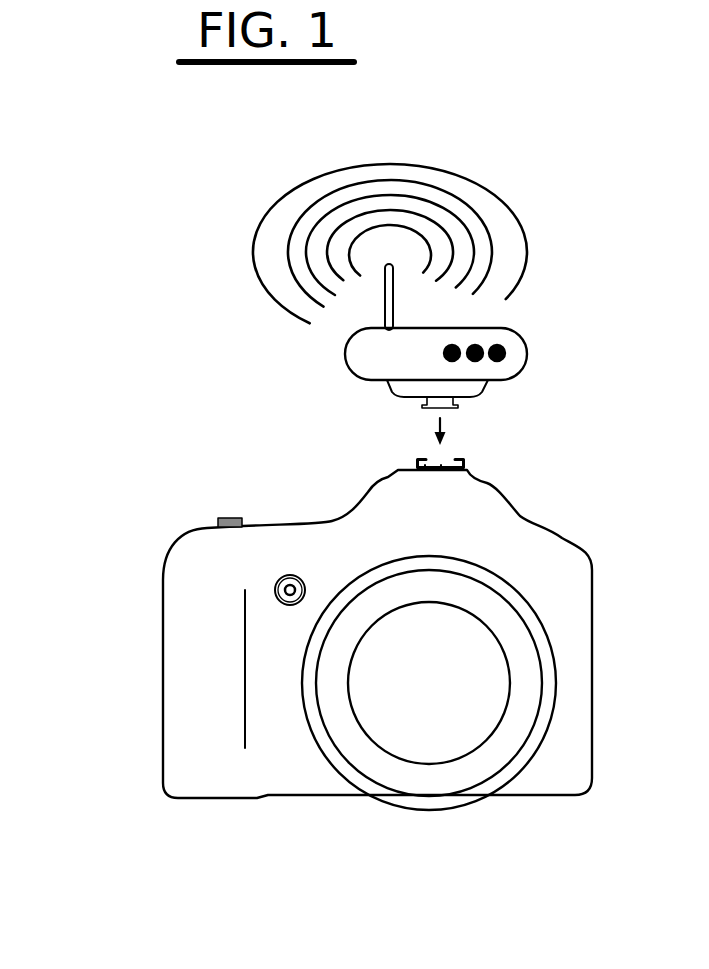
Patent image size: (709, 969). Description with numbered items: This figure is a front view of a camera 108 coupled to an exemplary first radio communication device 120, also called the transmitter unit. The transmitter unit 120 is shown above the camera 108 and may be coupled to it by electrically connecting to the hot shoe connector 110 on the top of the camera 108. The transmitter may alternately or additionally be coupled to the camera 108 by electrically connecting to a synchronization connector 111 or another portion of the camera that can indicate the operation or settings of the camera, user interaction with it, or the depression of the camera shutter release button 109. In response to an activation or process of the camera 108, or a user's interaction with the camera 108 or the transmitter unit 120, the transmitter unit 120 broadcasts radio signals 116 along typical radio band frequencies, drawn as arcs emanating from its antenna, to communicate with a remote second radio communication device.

The camera 108 is at (178, 530).
The camera shutter release button 109 is at (222, 508).
The hot shoe connector 110 is at (473, 463).
The synchronization connector 111 is at (287, 565).
The radio signals 116 is at (528, 213).
The first radio communication device 120 is at (538, 353).